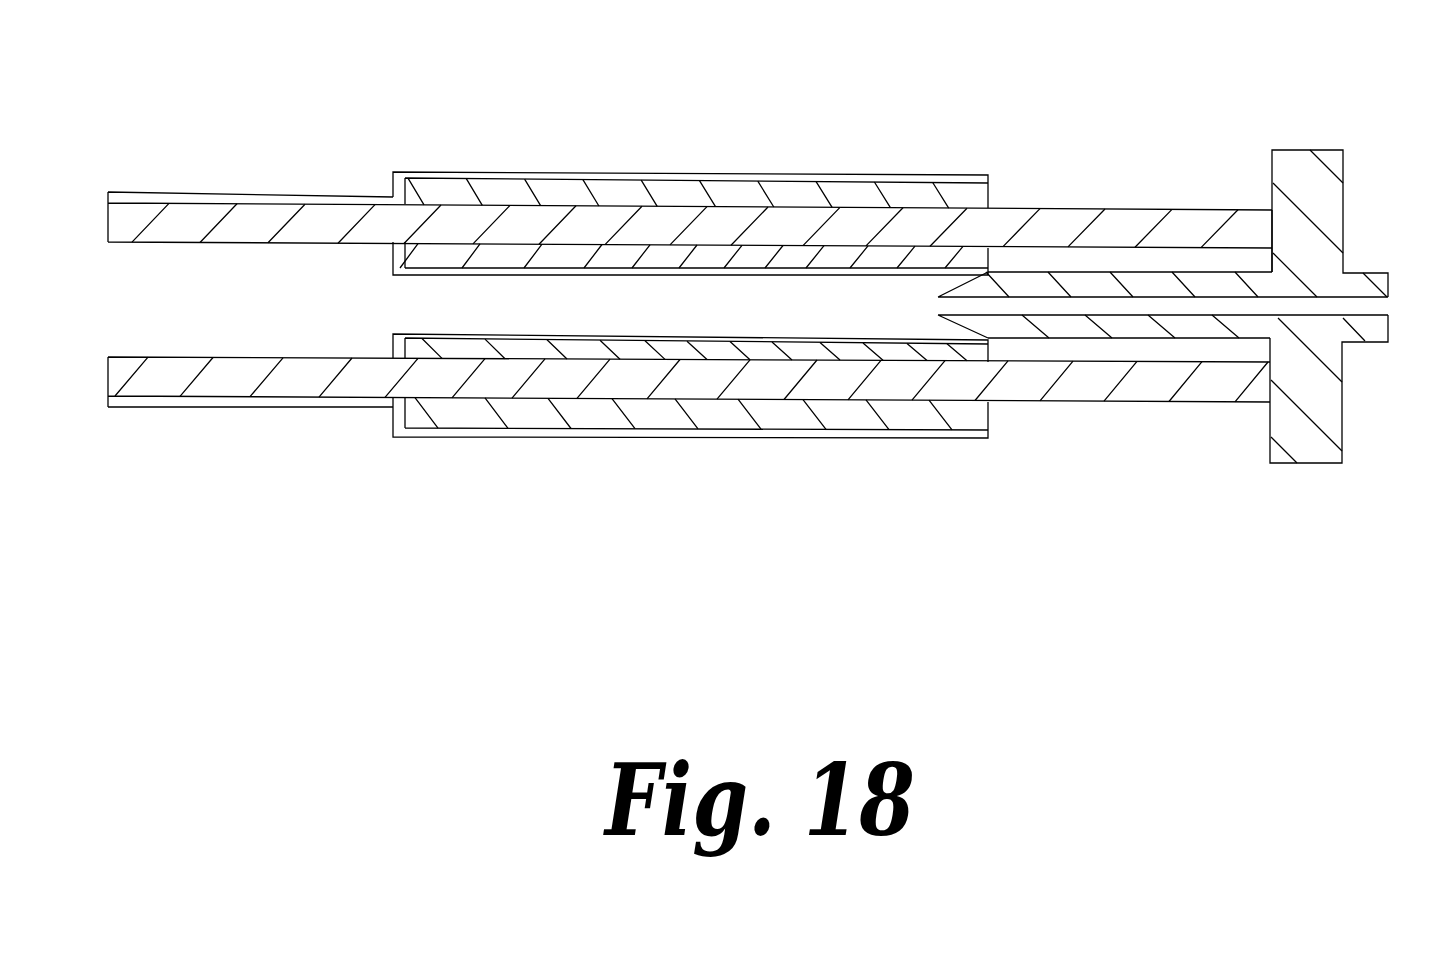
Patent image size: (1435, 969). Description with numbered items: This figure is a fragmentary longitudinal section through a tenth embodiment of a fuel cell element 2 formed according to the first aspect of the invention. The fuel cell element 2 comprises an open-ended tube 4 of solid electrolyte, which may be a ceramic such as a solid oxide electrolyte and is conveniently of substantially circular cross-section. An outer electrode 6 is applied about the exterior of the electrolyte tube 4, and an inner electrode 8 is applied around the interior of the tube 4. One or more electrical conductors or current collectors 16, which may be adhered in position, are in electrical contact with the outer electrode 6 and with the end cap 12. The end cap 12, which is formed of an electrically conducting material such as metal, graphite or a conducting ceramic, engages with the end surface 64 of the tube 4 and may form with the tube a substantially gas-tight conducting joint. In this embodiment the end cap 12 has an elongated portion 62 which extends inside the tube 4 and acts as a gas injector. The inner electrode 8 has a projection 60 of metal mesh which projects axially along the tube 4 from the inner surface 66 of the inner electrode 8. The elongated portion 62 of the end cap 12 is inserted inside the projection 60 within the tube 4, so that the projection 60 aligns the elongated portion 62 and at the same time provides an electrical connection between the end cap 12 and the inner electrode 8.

The fuel cell element 2 is at (691, 144).
The electrolyte tube 4 is at (1082, 223).
The outer electrode 6 is at (845, 190).
The inner electrode 8 is at (962, 351).
The end cap 12 is at (1298, 188).
The electrical conductor or current collector 16 is at (440, 172).
The projection 60 is at (1140, 341).
The elongated portion 62 is at (1027, 288).
The end surface 64 is at (1258, 208).
The inner surface 66 is at (433, 268).